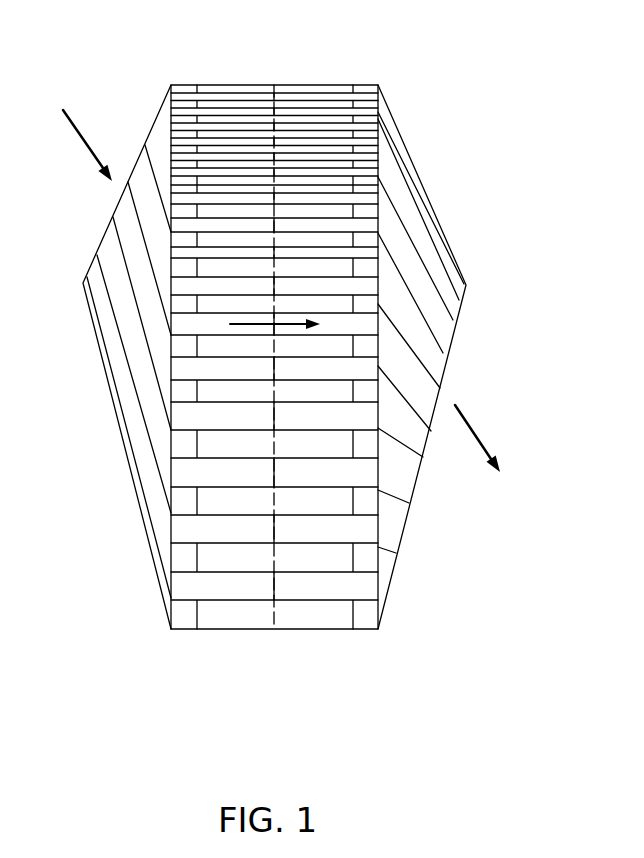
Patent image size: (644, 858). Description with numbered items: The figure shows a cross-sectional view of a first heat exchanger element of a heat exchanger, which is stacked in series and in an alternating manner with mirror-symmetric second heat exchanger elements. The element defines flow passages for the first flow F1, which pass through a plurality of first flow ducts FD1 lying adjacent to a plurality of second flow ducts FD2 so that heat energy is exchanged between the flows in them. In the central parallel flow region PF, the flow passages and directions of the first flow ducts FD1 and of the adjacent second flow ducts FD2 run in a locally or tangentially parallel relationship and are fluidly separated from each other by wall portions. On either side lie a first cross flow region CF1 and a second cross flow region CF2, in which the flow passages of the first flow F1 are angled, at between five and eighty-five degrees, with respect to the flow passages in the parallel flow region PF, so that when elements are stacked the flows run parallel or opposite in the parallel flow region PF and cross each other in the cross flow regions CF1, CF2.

The first flow F1 is at (92, 142).
The parallel flow region PF is at (286, 65).
The first cross flow region CF1 is at (106, 417).
The second cross flow region CF2 is at (475, 262).
The first flow ducts FD1 is at (332, 503).
The second flow ducts FD2 is at (340, 472).